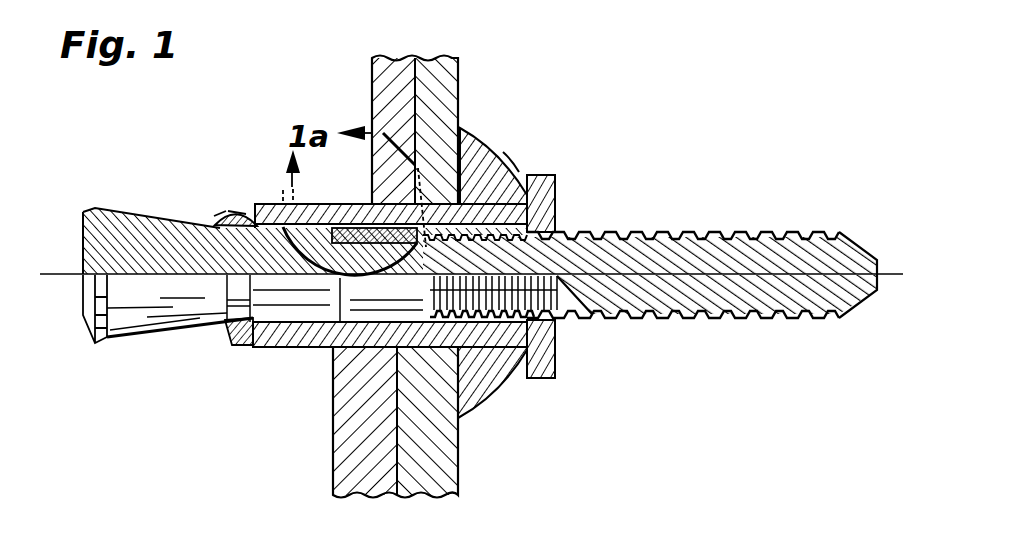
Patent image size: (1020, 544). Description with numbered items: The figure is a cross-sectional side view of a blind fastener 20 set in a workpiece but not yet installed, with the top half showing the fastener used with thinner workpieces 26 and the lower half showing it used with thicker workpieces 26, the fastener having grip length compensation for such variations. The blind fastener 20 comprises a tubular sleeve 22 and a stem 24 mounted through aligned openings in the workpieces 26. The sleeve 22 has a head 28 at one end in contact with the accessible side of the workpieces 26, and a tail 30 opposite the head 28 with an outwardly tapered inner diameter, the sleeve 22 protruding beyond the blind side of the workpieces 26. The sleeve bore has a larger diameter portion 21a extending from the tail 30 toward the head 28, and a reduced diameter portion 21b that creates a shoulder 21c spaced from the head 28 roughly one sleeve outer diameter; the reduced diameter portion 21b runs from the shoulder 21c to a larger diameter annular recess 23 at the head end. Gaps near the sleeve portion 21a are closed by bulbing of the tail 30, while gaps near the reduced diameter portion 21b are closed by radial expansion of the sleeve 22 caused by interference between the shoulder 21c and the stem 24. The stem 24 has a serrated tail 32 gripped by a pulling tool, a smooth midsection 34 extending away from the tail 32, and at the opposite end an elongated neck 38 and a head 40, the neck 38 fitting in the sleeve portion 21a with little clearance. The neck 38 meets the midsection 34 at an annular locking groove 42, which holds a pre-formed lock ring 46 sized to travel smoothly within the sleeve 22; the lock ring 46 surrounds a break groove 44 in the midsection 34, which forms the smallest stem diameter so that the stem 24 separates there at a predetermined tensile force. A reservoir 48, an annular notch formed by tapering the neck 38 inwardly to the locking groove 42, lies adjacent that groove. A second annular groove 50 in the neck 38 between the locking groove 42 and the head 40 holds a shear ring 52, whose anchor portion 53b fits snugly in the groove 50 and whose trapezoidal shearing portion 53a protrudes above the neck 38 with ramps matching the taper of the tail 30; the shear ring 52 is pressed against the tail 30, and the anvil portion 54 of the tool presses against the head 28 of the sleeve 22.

The blind fastener 20 is at (722, 82).
The larger diameter portion 21a is at (316, 204).
The reduced diameter portion 21b is at (495, 385).
The shoulder 21c is at (392, 203).
The tubular sleeve 22 is at (485, 128).
The annular recess 23 is at (555, 222).
The stem 24 is at (634, 330).
The workpieces 26 is at (457, 72).
The head 28 is at (519, 160).
The tail 30 is at (250, 348).
The tail 32 is at (722, 232).
The smooth midsection 34 is at (470, 395).
The elongated neck 38 is at (143, 340).
The head 40 is at (93, 345).
The annular locking groove 42 is at (293, 347).
The break groove 44 is at (357, 228).
The lock ring 46 is at (366, 348).
The reservoir 48 is at (324, 352).
The second annular groove 50 is at (193, 209).
The shear ring 52 is at (206, 150).
The shearing portion 53a is at (233, 208).
The anchor portion 53b is at (215, 209).
The anvil portion 54 is at (555, 352).